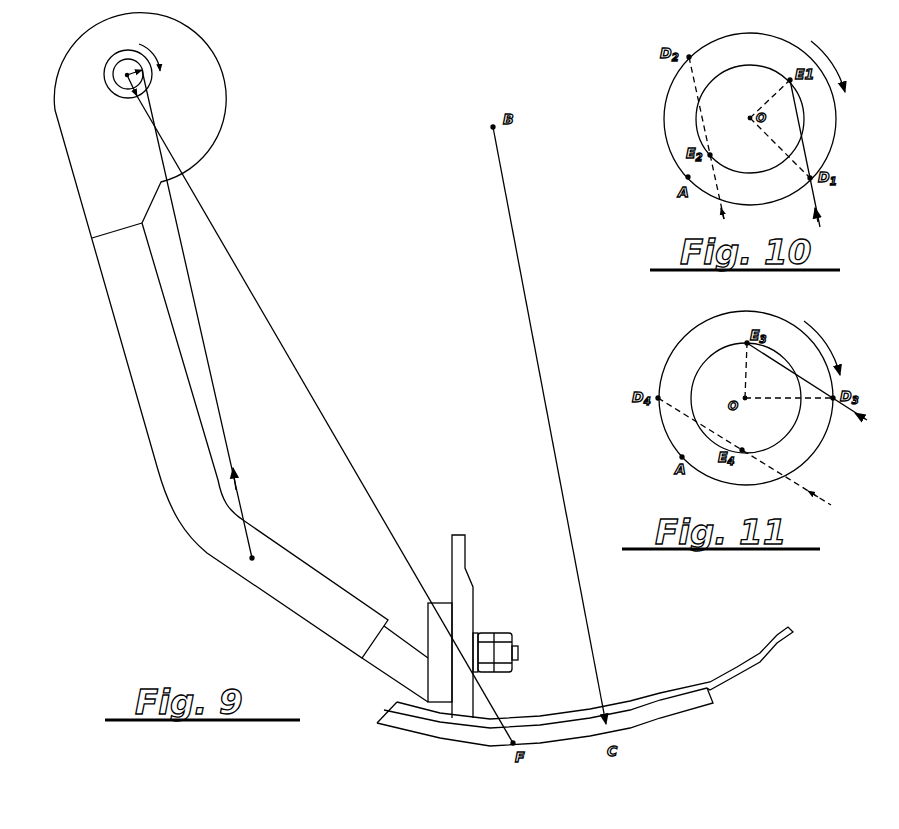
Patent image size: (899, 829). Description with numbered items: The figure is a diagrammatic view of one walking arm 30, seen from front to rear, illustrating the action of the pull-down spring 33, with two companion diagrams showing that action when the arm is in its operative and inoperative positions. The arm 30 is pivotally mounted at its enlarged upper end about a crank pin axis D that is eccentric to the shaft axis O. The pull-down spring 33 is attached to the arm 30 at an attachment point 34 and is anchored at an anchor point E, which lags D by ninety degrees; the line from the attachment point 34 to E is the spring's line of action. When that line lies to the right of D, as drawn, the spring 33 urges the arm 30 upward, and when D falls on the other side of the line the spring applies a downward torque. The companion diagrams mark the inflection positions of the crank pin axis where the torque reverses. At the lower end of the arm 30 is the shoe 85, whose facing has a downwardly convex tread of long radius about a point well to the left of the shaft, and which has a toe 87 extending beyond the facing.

In FIG. 9, the walking arm 30 is at (263, 588).
In FIG. 9, the pull-down spring 33 is at (212, 367).
In FIG. 10, the pull-down spring 33 is at (822, 228).
In FIG. 11, the pull-down spring 33 is at (884, 410).
In FIG. 9, the attachment point 34 is at (255, 559).
In FIG. 9, the shoe 85 is at (527, 718).
In FIG. 9, the toe 87 is at (782, 633).